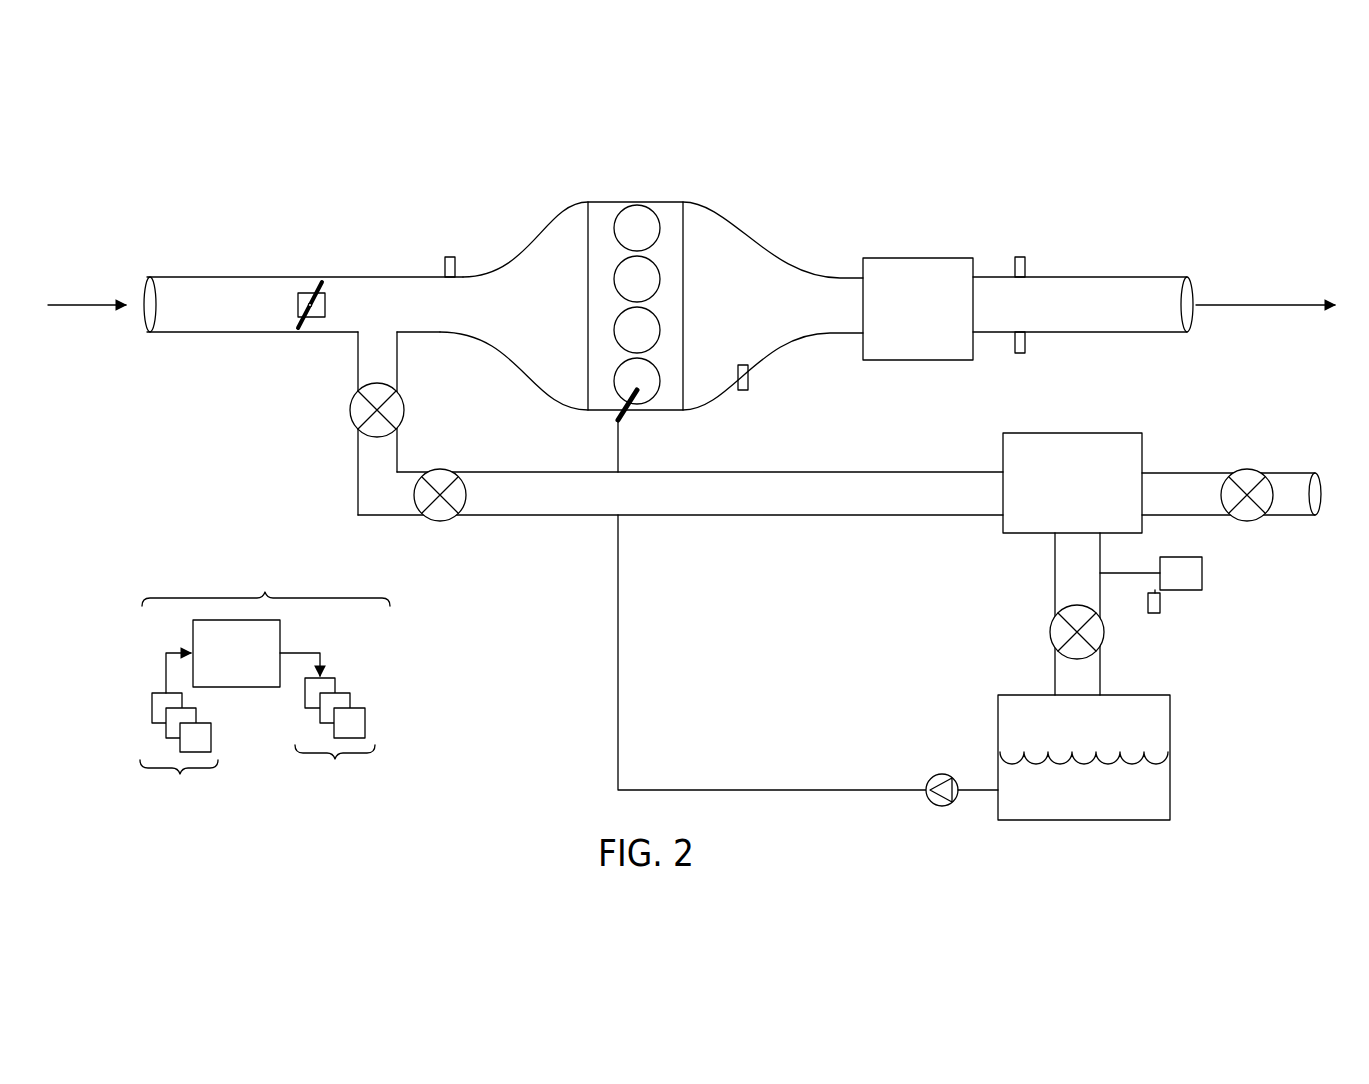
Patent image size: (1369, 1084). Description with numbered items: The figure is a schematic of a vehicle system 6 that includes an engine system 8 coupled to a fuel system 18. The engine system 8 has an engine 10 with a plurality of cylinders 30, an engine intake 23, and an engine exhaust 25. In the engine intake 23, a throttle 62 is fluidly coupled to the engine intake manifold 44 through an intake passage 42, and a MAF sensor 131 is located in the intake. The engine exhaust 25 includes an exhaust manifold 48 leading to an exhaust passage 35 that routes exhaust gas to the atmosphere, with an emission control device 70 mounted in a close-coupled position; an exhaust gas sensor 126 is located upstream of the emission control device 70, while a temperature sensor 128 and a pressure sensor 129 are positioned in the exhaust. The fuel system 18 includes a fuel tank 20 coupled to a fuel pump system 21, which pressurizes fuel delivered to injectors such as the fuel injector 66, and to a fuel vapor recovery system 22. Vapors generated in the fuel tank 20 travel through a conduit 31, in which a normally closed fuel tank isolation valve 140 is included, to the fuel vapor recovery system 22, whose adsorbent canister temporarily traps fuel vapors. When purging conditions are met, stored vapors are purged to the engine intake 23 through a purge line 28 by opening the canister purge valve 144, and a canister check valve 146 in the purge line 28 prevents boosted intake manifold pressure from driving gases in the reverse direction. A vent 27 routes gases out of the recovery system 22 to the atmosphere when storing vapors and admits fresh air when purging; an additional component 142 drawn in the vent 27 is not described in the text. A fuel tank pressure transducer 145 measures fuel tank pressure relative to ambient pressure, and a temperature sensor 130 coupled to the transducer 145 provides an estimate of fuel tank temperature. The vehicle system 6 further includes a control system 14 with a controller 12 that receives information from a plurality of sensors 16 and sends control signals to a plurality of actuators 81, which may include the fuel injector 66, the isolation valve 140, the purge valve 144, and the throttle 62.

The vehicle system 6 is at (140, 146).
The engine system 8 is at (1008, 128).
The engine 10 is at (683, 288).
The controller 12 is at (236, 653).
The control system 14 is at (266, 577).
The sensors 16 is at (180, 735).
The fuel system 18 is at (1092, 862).
The fuel tank 20 is at (1170, 798).
The fuel pump system 21 is at (938, 778).
The fuel vapor recovery system 22 is at (1143, 460).
The engine intake 23 is at (510, 226).
The engine exhaust 25 is at (910, 212).
The vent 27 is at (1231, 494).
The purge line 28 is at (680, 493).
The cylinders 30 is at (656, 222).
The conduit 31 is at (1077, 614).
The exhaust passage 35 is at (1137, 276).
The intake passage 42 is at (352, 334).
The engine intake manifold 44 is at (514, 306).
The exhaust manifold 48 is at (773, 306).
The throttle 62 is at (320, 314).
The fuel injector 66 is at (626, 418).
The emission control device 70 is at (903, 258).
The actuators 81 is at (331, 727).
The exhaust gas sensor 126 is at (748, 376).
The temperature sensor 128 is at (1014, 343).
The pressure sensor 129 is at (1014, 268).
The temperature sensor 130 is at (1160, 606).
The MAF sensor 131 is at (444, 270).
The fuel tank isolation valve 140 is at (1104, 634).
The canister vent valve 142 is at (1246, 469).
The canister purge valve 144 is at (442, 470).
The fuel tank pressure transducer 145 is at (1202, 584).
The canister check valve 146 is at (402, 408).